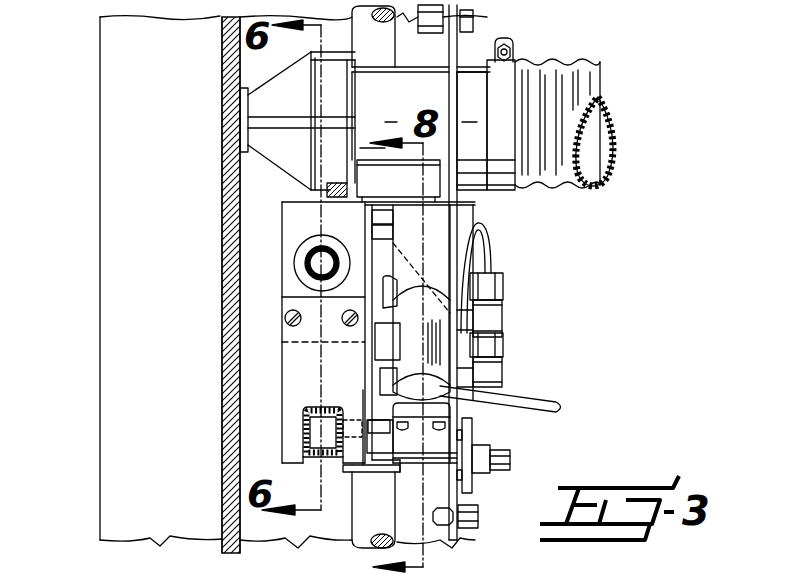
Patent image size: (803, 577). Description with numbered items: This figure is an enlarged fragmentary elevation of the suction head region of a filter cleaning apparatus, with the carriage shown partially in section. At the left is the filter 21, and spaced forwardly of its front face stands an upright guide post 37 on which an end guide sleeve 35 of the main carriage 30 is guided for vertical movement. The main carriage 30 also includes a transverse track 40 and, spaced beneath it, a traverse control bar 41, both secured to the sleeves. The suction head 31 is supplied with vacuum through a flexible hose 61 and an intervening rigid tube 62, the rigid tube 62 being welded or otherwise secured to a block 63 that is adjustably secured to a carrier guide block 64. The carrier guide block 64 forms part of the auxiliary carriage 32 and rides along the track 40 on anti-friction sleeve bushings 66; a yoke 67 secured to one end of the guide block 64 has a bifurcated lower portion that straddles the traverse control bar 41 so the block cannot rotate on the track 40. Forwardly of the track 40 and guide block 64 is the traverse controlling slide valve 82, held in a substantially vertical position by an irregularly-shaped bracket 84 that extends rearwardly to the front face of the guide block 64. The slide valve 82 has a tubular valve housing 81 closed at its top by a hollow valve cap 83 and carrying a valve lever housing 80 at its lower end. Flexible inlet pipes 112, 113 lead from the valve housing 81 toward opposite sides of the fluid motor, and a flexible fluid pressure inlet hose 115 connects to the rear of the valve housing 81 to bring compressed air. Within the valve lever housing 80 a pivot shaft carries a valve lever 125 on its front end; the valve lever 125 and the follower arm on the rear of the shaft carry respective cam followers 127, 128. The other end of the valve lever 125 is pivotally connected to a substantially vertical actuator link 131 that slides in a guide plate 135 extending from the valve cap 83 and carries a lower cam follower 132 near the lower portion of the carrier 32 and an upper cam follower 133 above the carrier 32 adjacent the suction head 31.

The filter 21 is at (222, 386).
The main carriage 30 is at (303, 440).
The suction head 31 is at (300, 110).
The auxiliary carriage 32 is at (275, 204).
The end guide sleeve 35 is at (373, 463).
The guide post 37 is at (385, 57).
The track 40 is at (296, 251).
The traverse control bar 41 is at (300, 434).
The flexible hose 61 is at (583, 72).
The rigid tube 62 is at (473, 80).
The block 63 is at (407, 191).
The carrier guide block 64 is at (290, 217).
The anti-friction sleeve bushing 66 is at (293, 274).
The yoke 67 is at (312, 371).
The valve lever housing 80 is at (437, 440).
The valve housing 81 is at (460, 375).
The slide valve 82 is at (430, 322).
The valve cap 83 is at (430, 220).
The bracket 84 is at (377, 243).
The inlet pipe 112 is at (484, 253).
The inlet pipe 113 is at (490, 339).
The fluid pressure inlet hose 115 is at (545, 392).
The valve lever 125 is at (475, 452).
The cam follower 127 is at (503, 452).
The cam follower 128 is at (330, 457).
The actuator link 131 is at (449, 87).
The lower cam follower 132 is at (478, 517).
The upper cam follower 133 is at (446, 30).
The guide plate 135 is at (430, 203).